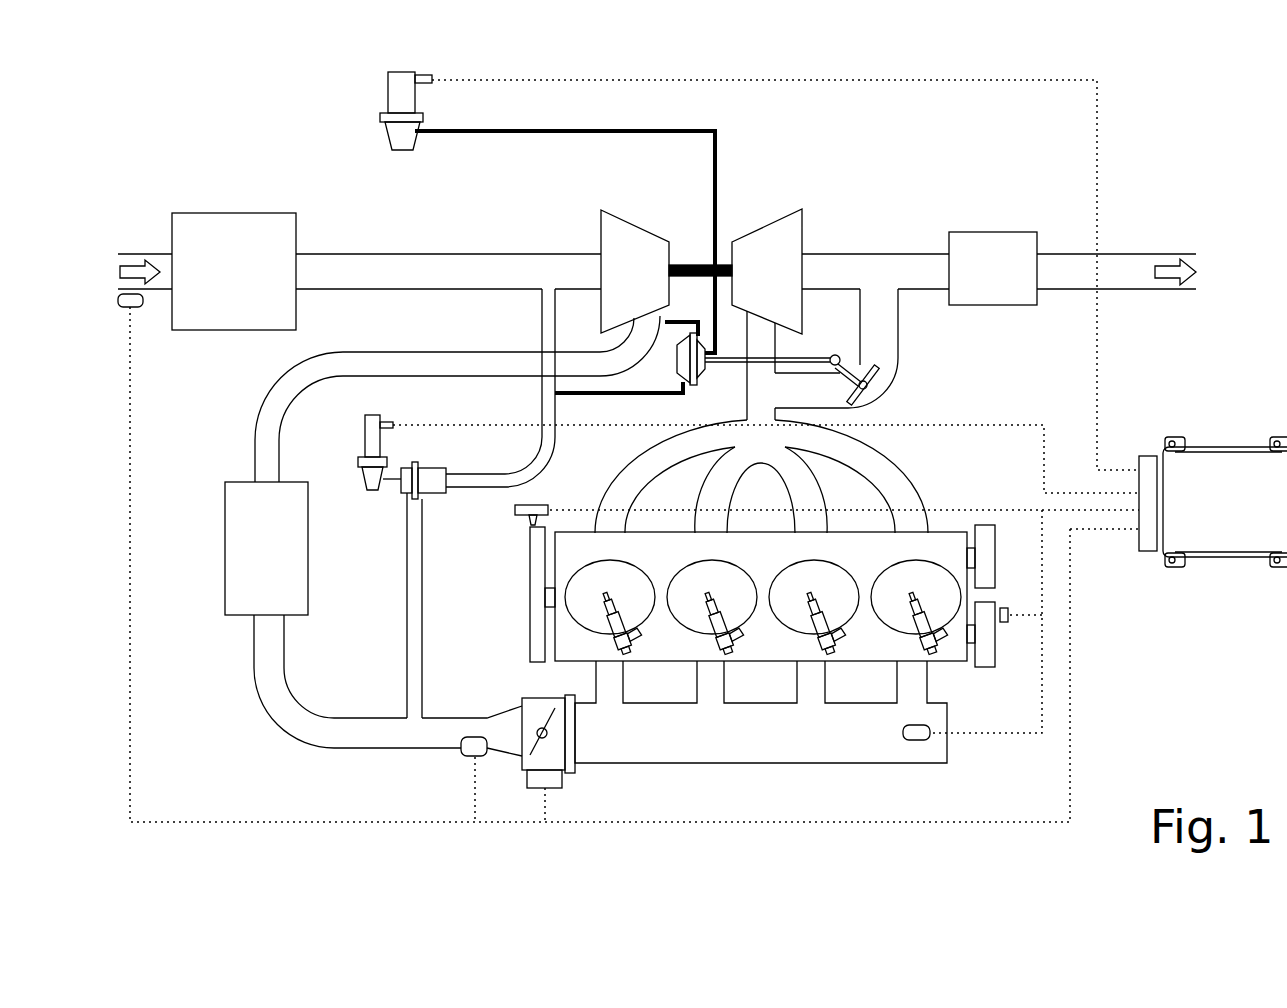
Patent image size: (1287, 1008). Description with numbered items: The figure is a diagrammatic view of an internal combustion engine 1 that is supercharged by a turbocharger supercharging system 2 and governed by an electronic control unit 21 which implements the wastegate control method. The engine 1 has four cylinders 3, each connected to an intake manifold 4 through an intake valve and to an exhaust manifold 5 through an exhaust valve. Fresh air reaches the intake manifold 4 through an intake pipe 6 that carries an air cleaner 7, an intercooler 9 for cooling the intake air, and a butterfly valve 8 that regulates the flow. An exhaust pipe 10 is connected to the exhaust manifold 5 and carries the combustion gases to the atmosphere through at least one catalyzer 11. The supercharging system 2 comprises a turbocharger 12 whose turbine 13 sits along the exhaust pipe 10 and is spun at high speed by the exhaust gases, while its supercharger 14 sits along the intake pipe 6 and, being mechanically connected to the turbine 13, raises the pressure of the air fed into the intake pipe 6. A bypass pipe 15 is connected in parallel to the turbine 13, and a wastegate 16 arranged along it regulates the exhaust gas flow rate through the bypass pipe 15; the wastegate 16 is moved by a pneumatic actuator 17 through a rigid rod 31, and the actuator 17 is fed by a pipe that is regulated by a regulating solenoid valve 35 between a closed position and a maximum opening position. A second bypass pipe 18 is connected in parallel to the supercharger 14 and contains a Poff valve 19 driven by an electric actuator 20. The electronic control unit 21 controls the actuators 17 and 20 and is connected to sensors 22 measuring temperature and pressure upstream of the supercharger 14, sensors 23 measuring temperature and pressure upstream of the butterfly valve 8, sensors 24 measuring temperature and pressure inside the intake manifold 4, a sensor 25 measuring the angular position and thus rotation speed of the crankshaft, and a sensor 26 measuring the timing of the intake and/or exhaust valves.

The internal combustion engine 1 is at (250, 105).
The supercharging system 2 is at (520, 216).
The cylinders 3 is at (763, 608).
The intake manifold 4 is at (761, 712).
The exhaust manifold 5 is at (761, 476).
The intake pipe 6 is at (265, 440).
The air cleaner 7 is at (234, 271).
The butterfly valve 8 is at (545, 762).
The intercooler 9 is at (266, 548).
The exhaust pipe 10 is at (923, 270).
The catalyzer 11 is at (993, 268).
The turbocharger 12 is at (702, 217).
The turbine 13 is at (742, 255).
The supercharger 14 is at (615, 237).
The bypass pipe 15 is at (893, 340).
The wastegate 16 is at (870, 378).
The pneumatic actuator 17 is at (700, 368).
The bypass pipe 18 is at (421, 592).
The Poff valve 19 is at (427, 500).
The electric actuator 20 is at (378, 440).
The electronic control unit 21 is at (1213, 502).
The sensors 22 is at (133, 308).
The sensors 23 is at (468, 757).
The sensors 24 is at (915, 740).
The sensor 25 is at (542, 505).
The sensor 26 is at (1005, 625).
The rigid rod 31 is at (810, 360).
The regulating solenoid valve 35 is at (410, 98).